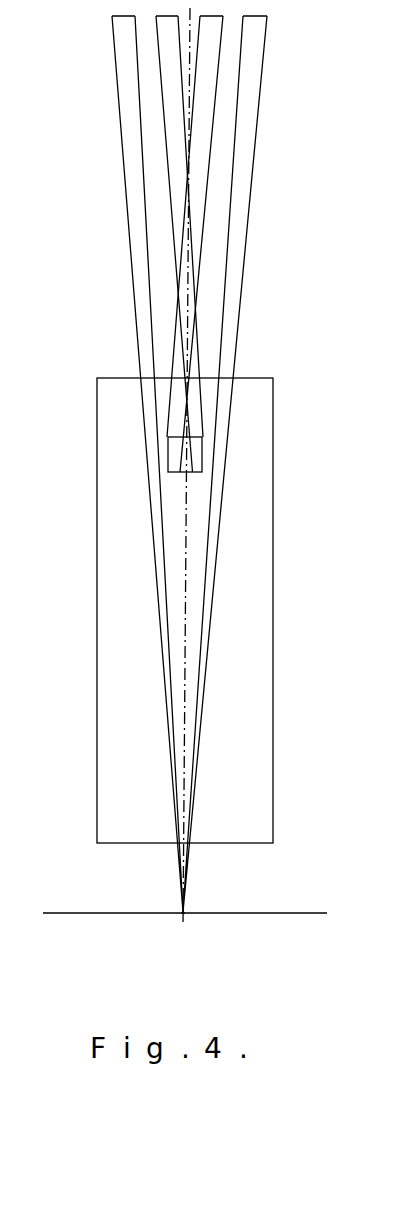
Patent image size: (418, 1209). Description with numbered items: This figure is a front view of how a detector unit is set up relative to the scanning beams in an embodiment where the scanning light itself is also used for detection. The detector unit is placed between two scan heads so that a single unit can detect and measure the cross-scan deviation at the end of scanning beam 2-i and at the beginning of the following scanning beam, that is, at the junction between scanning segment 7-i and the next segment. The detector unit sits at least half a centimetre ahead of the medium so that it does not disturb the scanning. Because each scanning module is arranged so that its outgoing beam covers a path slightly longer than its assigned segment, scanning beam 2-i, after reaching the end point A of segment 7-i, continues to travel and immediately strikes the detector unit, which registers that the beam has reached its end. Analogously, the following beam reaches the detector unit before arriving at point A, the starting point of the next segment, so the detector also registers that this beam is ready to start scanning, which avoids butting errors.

The scanning beam 2-i is at (120, 135).
The scanning segment 7-i is at (98, 913).
The end point A is at (183, 913).